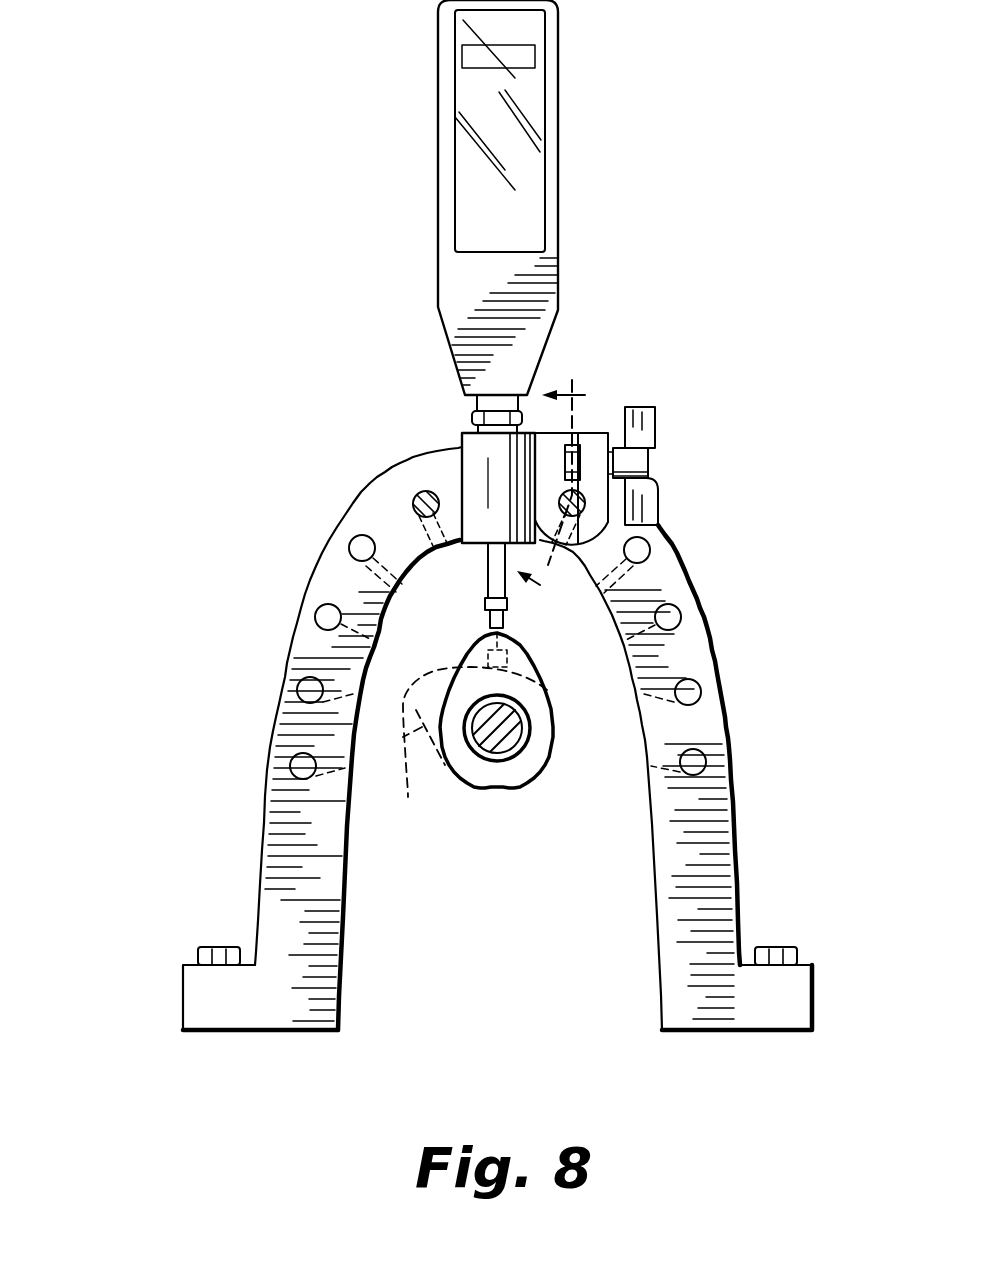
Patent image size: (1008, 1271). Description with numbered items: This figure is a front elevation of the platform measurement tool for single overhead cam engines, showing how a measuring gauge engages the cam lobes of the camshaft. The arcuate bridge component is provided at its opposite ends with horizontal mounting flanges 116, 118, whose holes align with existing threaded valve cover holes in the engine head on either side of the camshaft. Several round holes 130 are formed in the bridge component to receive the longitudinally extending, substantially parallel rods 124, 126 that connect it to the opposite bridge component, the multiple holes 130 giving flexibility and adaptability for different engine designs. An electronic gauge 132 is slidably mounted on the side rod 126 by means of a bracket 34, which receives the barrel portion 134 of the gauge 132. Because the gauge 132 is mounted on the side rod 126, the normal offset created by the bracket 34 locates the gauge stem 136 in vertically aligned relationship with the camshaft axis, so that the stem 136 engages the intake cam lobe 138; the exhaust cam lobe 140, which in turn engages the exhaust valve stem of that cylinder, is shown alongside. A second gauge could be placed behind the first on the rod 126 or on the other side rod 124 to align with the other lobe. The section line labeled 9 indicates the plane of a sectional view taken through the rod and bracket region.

The bracket 34 is at (452, 453).
The horizontal mounting flange 116 is at (204, 990).
The horizontal mounting flange 118 is at (775, 980).
The rod 124 is at (422, 491).
The rod 126 is at (612, 521).
The round holes 130 is at (318, 613).
The electronic gauge 132 is at (570, 262).
The barrel portion 134 is at (489, 567).
The gauge stem 136 is at (487, 647).
The intake cam lobe 138 is at (523, 663).
The exhaust cam lobe 140 is at (475, 751).
The section line 9- 9 is at (566, 493).